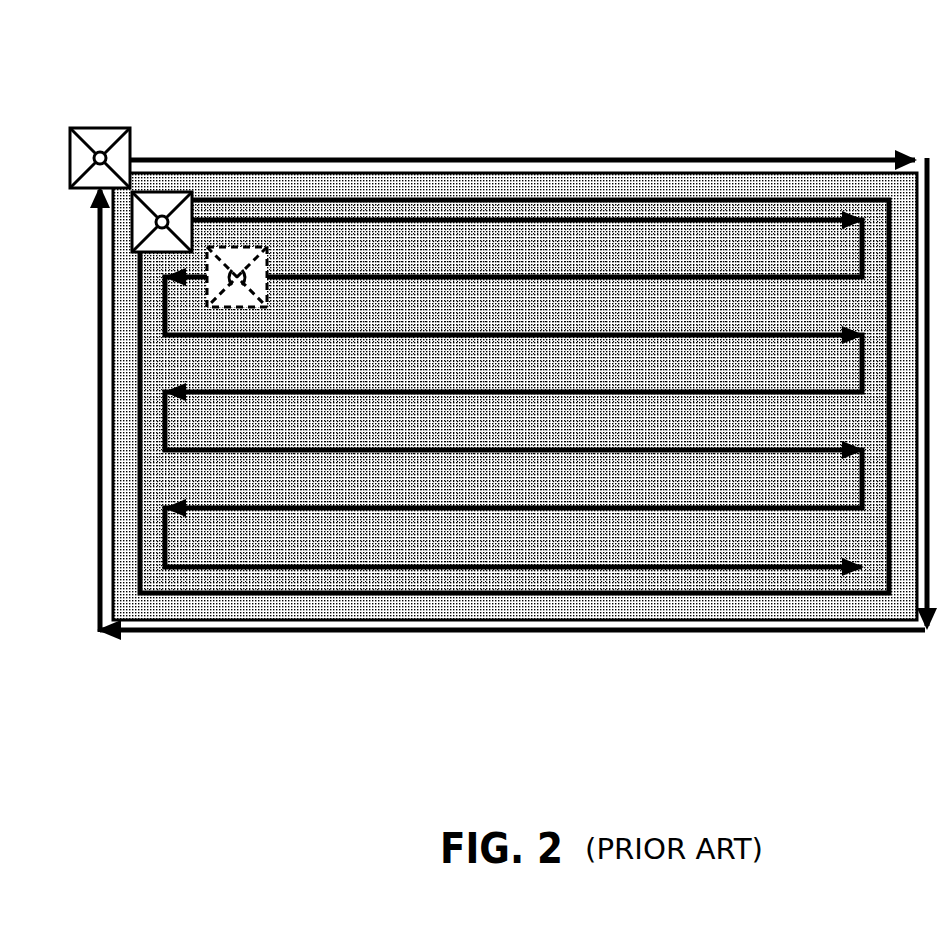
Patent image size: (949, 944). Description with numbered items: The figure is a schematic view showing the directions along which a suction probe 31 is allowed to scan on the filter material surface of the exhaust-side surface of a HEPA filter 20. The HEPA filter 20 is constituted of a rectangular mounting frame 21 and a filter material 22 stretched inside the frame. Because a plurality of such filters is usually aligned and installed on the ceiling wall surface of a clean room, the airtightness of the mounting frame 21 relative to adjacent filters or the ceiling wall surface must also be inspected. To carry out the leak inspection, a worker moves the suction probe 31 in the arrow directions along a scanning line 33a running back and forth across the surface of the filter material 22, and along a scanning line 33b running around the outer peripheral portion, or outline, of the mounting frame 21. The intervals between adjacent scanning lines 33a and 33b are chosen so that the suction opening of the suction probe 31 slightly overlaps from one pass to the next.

The HEPA filter 20 is at (503, 384).
The mounting frame 21 is at (603, 183).
The filter material 22 is at (510, 250).
The suction probe 31 is at (236, 247).
The scanning line 33a is at (437, 500).
The scanning line 33b is at (348, 633).